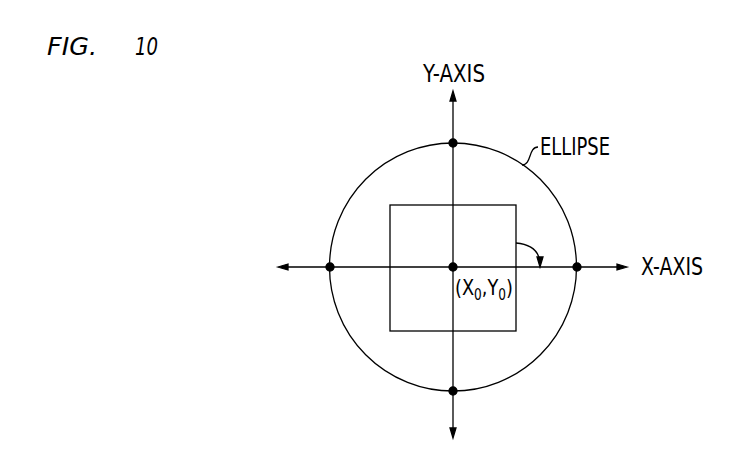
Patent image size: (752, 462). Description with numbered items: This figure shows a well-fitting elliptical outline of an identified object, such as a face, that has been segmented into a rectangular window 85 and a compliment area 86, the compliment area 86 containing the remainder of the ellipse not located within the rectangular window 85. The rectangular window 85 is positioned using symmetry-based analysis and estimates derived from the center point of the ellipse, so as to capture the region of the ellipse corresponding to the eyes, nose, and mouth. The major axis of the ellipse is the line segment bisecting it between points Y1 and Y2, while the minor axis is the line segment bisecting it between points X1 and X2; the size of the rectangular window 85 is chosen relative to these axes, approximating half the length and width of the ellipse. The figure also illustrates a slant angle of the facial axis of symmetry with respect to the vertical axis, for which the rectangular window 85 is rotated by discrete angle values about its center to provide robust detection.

The rectangular window 85 is at (470, 205).
The compliment area 86 is at (560, 206).
The point x1 X1 is at (341, 282).
The point x2 X2 is at (587, 282).
The point y1 Y1 is at (464, 408).
The point y2 Y2 is at (464, 130).